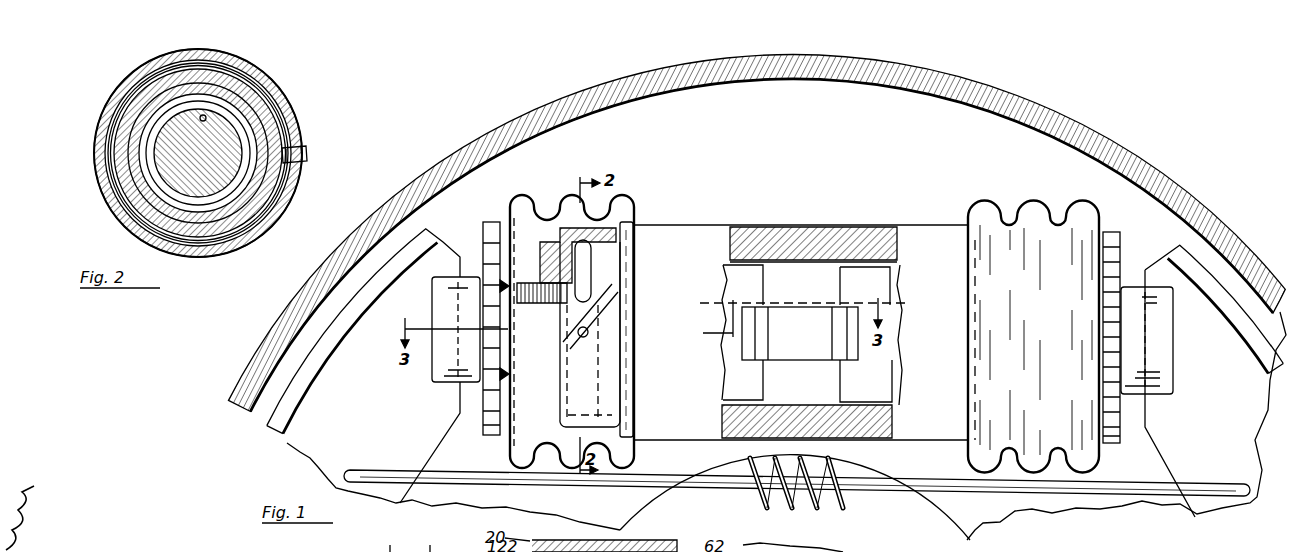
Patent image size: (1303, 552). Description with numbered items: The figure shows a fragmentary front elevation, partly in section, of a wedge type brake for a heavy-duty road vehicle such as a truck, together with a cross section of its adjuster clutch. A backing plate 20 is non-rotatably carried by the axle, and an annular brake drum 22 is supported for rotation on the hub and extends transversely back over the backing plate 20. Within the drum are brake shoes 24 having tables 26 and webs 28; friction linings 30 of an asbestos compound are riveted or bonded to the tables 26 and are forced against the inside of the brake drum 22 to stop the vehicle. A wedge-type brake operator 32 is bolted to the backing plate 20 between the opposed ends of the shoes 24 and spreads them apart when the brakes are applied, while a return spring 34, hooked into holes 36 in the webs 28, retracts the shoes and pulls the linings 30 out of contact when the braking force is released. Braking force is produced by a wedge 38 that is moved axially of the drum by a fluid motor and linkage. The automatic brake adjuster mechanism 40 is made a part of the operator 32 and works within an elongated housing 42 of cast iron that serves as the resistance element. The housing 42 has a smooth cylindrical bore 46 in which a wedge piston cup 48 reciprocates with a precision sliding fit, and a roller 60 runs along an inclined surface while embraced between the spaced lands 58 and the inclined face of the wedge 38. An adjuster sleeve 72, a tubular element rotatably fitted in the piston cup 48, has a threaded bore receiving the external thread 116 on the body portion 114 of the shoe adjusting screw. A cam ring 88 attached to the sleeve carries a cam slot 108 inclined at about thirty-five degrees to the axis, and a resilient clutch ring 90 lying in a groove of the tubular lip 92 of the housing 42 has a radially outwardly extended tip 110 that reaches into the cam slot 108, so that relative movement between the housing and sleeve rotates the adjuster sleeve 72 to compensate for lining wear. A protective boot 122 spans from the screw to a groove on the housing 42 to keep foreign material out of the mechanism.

In FIG. 1, the backing plate 20 is at (978, 166).
In FIG. 1, the brake drum 22 is at (1060, 120).
In FIG. 1, the brake shoes 24 is at (282, 449).
In FIG. 1, the tables 26 is at (276, 432).
In FIG. 1, the webs 28 is at (371, 420).
In FIG. 1, the friction linings 30 is at (300, 362).
In FIG. 1, the wedge-type brake operator 32 is at (828, 200).
In FIG. 1, the return spring 34 is at (833, 500).
In FIG. 1, the holes 36 is at (346, 472).
In FIG. 1, the wedge 38 is at (800, 306).
In FIG. 1, the automatic brake adjuster mechanism 40 is at (572, 170).
In FIG. 1, the housing 42 is at (880, 230).
In FIG. 1, the cylindrical bore 46 is at (773, 262).
In FIG. 1, the wedge piston cup 48 is at (763, 393).
In FIG. 1, the spaced lands 58 is at (763, 263).
In FIG. 1, the roller 60 is at (850, 318).
In FIG. 2, the adjuster sleeve 72 is at (212, 122).
In FIG. 1, the cam ring 88 is at (553, 231).
In FIG. 2, the cam ring 88 is at (280, 134).
In FIG. 1, the clutch ring 90 is at (628, 214).
In FIG. 2, the clutch ring 90 is at (292, 142).
In FIG. 1, the tubular lip 92 is at (616, 278).
In FIG. 2, the tubular lip 92 is at (265, 128).
In FIG. 1, the cam slot 108 is at (598, 336).
In FIG. 1, the radially outwardly extended tip 110 is at (596, 341).
In FIG. 2, the radially outwardly extended tip 110 is at (308, 155).
In FIG. 2, the body portion 114 is at (204, 117).
In FIG. 2, the external thread 116 is at (236, 115).
In FIG. 1, the protective boot 122 is at (514, 198).